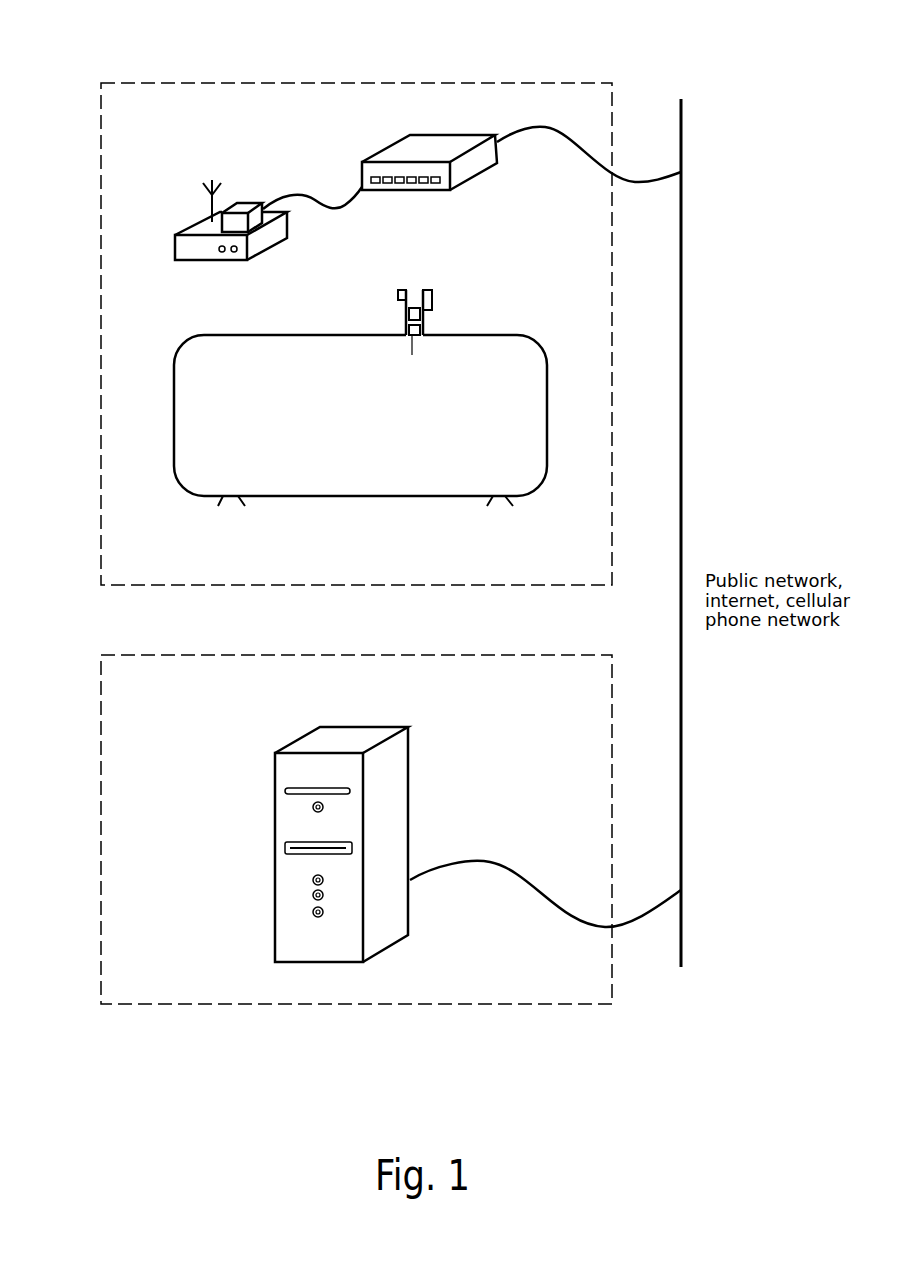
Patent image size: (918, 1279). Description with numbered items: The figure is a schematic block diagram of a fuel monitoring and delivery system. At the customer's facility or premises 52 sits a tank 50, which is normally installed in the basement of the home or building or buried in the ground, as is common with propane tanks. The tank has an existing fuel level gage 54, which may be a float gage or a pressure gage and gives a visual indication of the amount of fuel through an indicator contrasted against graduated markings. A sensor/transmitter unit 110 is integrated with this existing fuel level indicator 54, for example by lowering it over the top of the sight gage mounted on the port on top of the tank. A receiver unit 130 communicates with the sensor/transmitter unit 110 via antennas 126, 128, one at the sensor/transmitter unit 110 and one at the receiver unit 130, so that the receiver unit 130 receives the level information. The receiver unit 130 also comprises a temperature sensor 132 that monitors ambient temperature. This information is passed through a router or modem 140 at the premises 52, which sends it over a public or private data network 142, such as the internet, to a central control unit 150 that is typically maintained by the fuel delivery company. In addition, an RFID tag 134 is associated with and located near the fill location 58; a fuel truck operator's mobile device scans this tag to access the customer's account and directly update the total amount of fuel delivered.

The tank 50 is at (547, 382).
The customer's facility/house (premises) 52 is at (101, 483).
The fuel level gage 54 is at (405, 330).
The fill location 58 is at (394, 285).
The sensor/transmitter unit 110 is at (425, 317).
The antenna 126 is at (433, 298).
The antenna 128 is at (207, 200).
The receiver unit 130 is at (175, 249).
The temperature sensor 132 is at (248, 204).
The RFID tag 134 is at (398, 292).
The router or modem 140 is at (478, 135).
The public or private data network 142 is at (683, 140).
The central control unit 150 is at (415, 835).